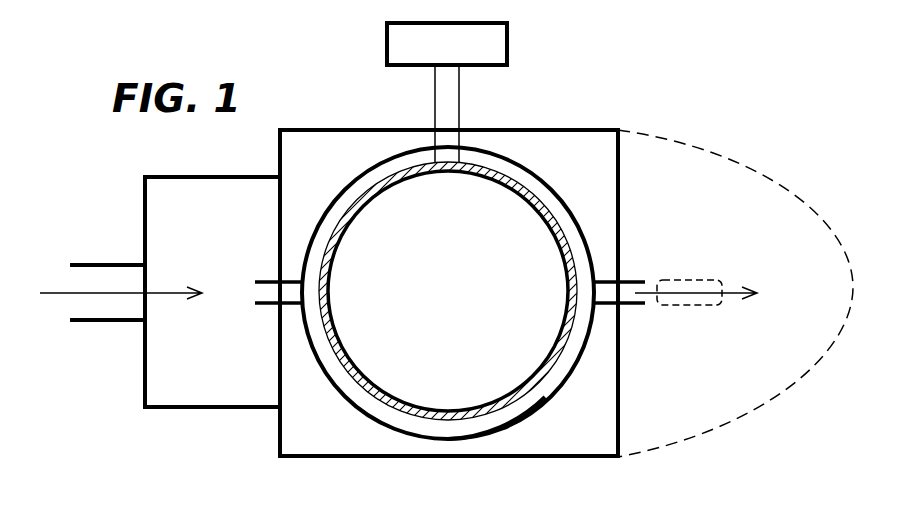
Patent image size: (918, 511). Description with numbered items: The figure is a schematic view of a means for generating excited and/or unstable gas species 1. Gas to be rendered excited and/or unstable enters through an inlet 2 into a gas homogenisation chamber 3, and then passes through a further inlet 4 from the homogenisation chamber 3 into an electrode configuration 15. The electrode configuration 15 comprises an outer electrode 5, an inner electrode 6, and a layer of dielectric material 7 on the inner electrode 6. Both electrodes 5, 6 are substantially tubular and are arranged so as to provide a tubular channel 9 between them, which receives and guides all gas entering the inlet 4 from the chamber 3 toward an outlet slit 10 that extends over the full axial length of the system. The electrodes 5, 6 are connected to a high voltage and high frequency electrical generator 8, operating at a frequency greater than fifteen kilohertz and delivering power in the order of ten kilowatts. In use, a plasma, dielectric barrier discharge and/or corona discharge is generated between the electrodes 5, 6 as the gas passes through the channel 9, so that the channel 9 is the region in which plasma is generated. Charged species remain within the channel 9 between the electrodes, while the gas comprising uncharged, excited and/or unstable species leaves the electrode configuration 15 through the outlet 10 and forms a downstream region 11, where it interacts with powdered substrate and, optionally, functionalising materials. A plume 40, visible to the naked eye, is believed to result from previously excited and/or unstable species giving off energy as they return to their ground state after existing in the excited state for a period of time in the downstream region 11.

The means for generating excited and/or unstable gas species 1 is at (313, 128).
The inlet 2 is at (84, 304).
The gas homogenisation chamber 3 is at (213, 408).
The inlet 4 is at (266, 293).
The outer electrode 5 is at (553, 190).
The inner electrode 6 is at (383, 190).
The layer of dielectric material 7 is at (501, 172).
The high voltage and high frequency electrical generator 8 is at (507, 43).
The tubular channel 9 is at (556, 384).
The outlet slit 10 is at (636, 296).
The downstream region 11 is at (736, 171).
The electrode configuration 15 is at (469, 308).
The plume 40 is at (694, 308).